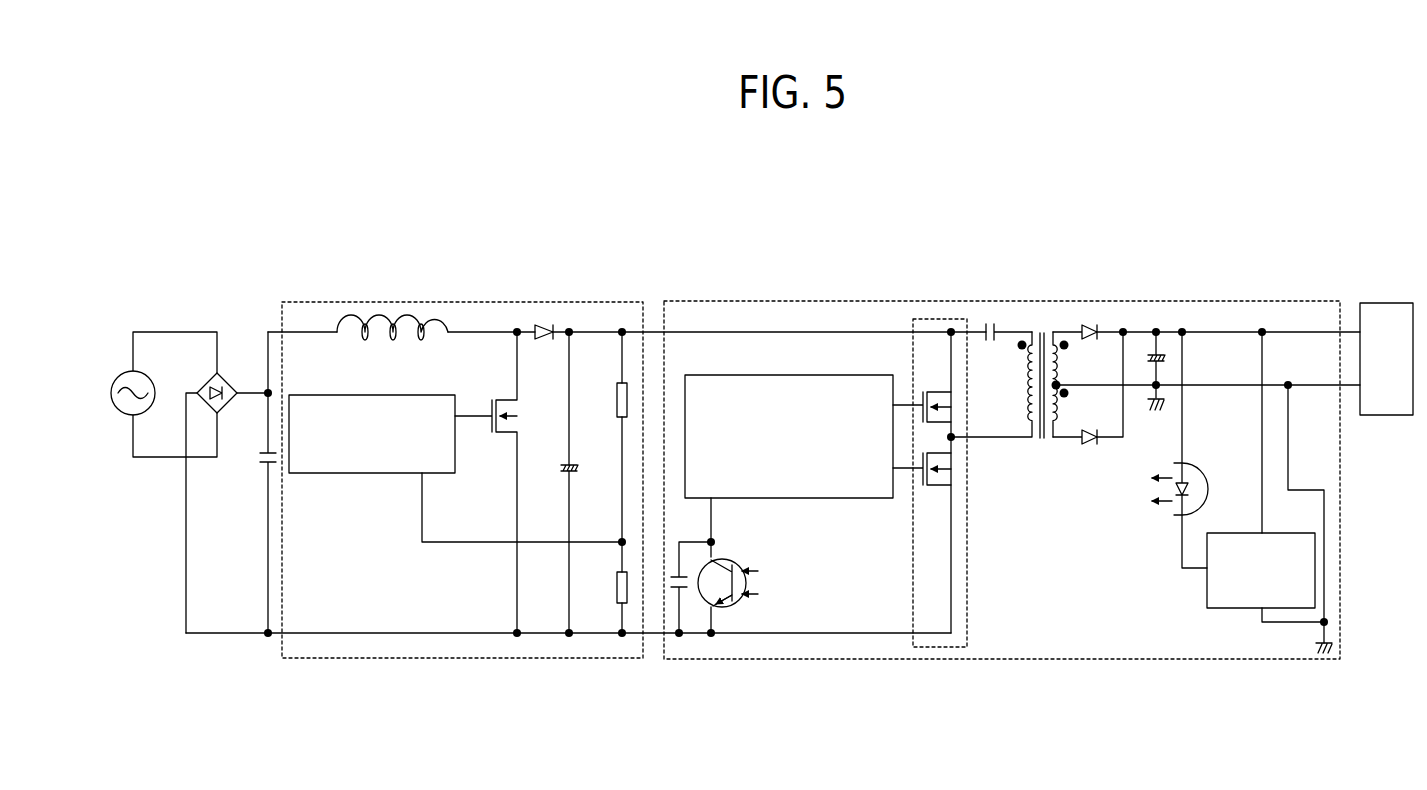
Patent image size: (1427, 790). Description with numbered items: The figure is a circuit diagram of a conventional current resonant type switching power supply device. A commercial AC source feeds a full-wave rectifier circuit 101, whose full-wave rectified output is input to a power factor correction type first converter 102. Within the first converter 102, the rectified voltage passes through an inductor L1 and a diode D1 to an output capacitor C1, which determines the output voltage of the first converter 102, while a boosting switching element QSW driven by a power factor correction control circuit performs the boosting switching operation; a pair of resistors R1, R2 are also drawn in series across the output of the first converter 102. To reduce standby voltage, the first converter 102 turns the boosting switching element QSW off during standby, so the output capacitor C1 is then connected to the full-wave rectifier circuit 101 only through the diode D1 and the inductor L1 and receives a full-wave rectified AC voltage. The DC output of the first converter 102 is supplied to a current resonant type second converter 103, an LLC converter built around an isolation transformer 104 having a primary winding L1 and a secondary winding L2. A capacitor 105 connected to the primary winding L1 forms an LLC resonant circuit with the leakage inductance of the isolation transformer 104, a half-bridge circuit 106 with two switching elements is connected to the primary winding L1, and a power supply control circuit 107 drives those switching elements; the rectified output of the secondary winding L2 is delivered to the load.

The full-wave rectifier circuit 101 is at (226, 380).
The power factor correction type first converter 102 is at (345, 302).
The current resonant type second converter 103 is at (810, 301).
The isolation transformer 104 is at (1046, 320).
The capacitor 105 is at (988, 332).
The half-bridge circuit 106 is at (967, 547).
The power supply control circuit 107 is at (727, 378).
The primary winding / inductor L1 is at (410, 316).
The secondary winding L2 is at (1062, 412).
The diode D1 is at (545, 322).
The boosting switching element QSW is at (490, 400).
The output capacitor C1 is at (566, 462).
The resistor R1 is at (615, 398).
The resistor R2 is at (617, 592).